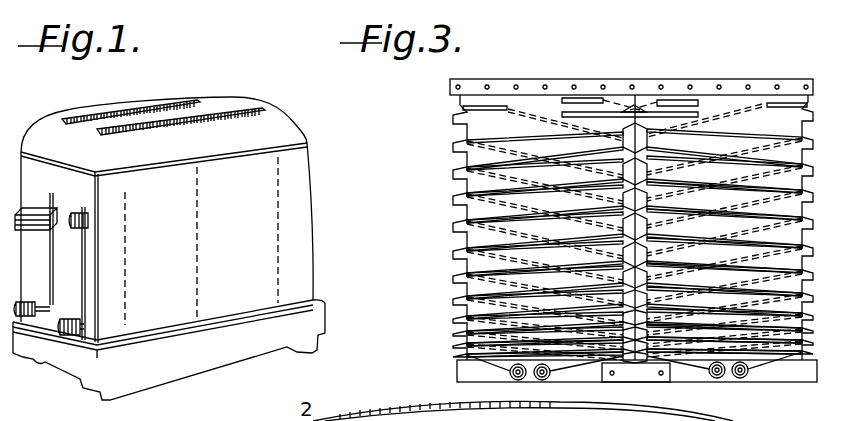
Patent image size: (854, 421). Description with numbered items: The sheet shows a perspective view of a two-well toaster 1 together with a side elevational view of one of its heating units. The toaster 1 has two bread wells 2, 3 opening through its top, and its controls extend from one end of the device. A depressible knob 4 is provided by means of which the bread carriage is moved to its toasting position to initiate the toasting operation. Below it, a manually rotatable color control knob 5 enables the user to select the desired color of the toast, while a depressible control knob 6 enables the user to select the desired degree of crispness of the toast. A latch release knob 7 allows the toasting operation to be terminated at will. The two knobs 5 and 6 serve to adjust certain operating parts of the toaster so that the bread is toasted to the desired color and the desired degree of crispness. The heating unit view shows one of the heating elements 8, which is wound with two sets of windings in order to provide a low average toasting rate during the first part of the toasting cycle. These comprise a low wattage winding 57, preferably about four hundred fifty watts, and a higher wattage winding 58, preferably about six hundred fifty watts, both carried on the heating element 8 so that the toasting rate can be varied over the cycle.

In FIG. 1, the toaster 1 is at (302, 221).
In FIG. 1, the bread well 2 is at (117, 112).
In FIG. 1, the bread well 3 is at (197, 113).
In FIG. 1, the depressible knob 4 is at (34, 216).
In FIG. 1, the color control knob 5 is at (29, 303).
In FIG. 1, the depressible control knob 6 is at (77, 215).
In FIG. 1, the latch release knob 7 is at (68, 321).
In FIG. 3, the heating element 8 is at (470, 154).
In FIG. 3, the low wattage winding 57 is at (467, 305).
In FIG. 3, the higher wattage winding 58 is at (468, 332).